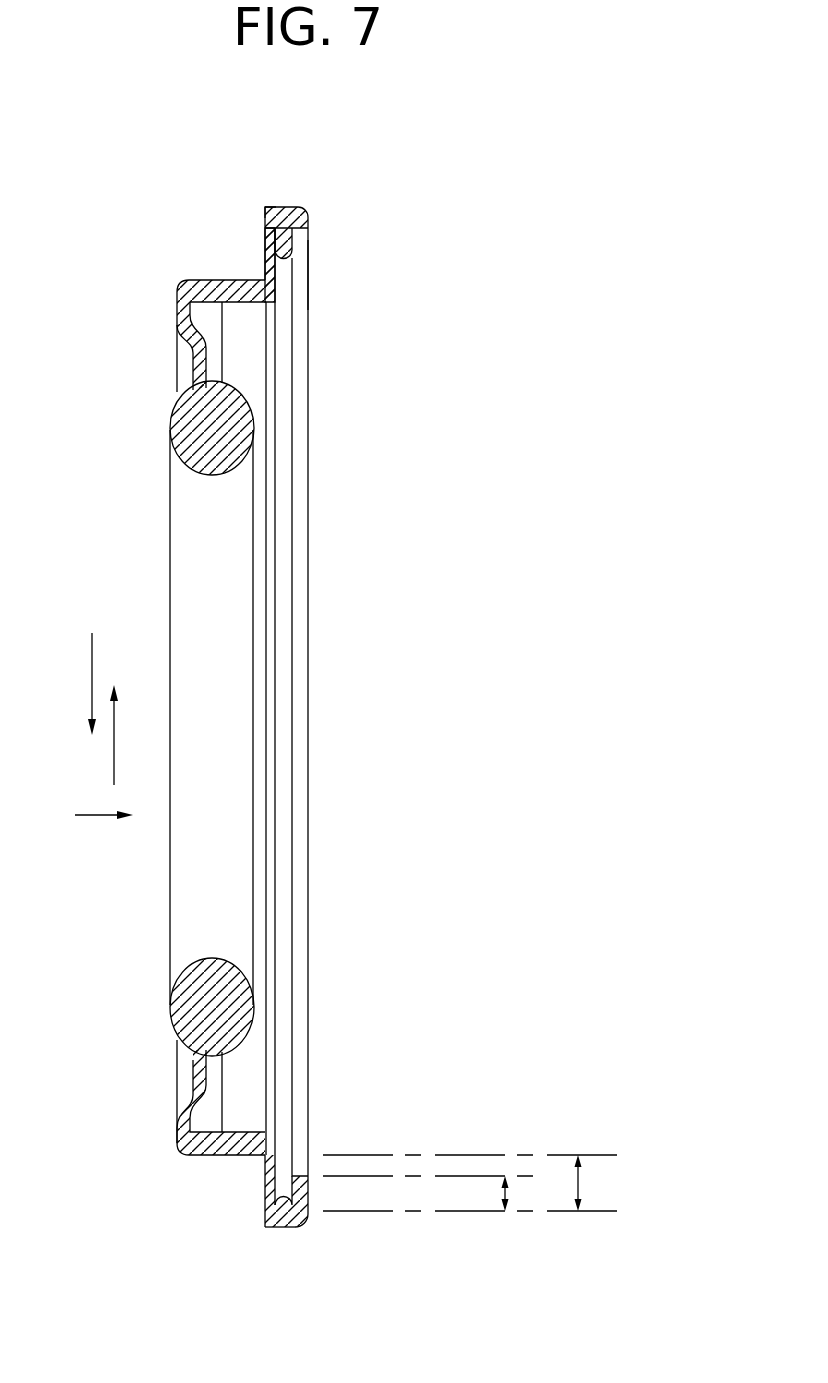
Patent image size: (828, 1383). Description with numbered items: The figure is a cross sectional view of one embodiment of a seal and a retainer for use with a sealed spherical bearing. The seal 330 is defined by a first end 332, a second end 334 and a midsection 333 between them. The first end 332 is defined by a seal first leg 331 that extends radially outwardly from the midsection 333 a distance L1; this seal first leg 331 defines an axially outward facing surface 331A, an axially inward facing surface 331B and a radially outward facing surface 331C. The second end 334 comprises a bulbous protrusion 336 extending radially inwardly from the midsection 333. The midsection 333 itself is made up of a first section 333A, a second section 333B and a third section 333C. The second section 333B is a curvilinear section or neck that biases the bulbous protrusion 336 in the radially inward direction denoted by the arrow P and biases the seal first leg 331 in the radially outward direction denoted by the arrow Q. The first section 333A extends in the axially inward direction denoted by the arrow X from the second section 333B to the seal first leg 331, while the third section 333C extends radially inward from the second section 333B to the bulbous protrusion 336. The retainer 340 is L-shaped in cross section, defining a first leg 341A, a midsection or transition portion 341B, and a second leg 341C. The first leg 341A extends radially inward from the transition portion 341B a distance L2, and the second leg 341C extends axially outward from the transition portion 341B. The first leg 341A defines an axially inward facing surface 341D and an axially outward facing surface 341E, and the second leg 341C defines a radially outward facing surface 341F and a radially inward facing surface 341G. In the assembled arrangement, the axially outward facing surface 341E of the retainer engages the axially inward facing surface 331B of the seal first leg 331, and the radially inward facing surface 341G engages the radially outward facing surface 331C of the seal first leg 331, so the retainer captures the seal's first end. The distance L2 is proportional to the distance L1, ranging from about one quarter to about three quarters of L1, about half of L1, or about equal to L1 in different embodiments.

The seal 330 is at (178, 302).
The seal first leg 331 is at (278, 1173).
The axially outward facing surface 331A is at (267, 1202).
The axially inward facing surface 331B is at (304, 1214).
The radially outward facing surface 331C is at (268, 1212).
The first end 332 is at (273, 248).
The midsection 333 is at (187, 1143).
The first section 333A is at (222, 1150).
The second section 333B is at (178, 1125).
The third section 333C is at (207, 1072).
The second end 334 is at (178, 475).
The bulbous protrusion 336 is at (174, 413).
The retainer 340 is at (305, 229).
The first leg 341A is at (300, 243).
The transition portion 341B is at (305, 214).
The second leg 341C is at (266, 207).
The axially inward facing surface 341D is at (303, 258).
The axially outward facing surface 341E is at (302, 288).
The radially outward facing surface 341F is at (285, 207).
The radially inward facing surface 341G is at (263, 230).
The arrow P is at (125, 722).
The arrow Q is at (75, 688).
The arrow X is at (107, 831).
The distance L1 is at (578, 1181).
The distance L2 is at (507, 1193).